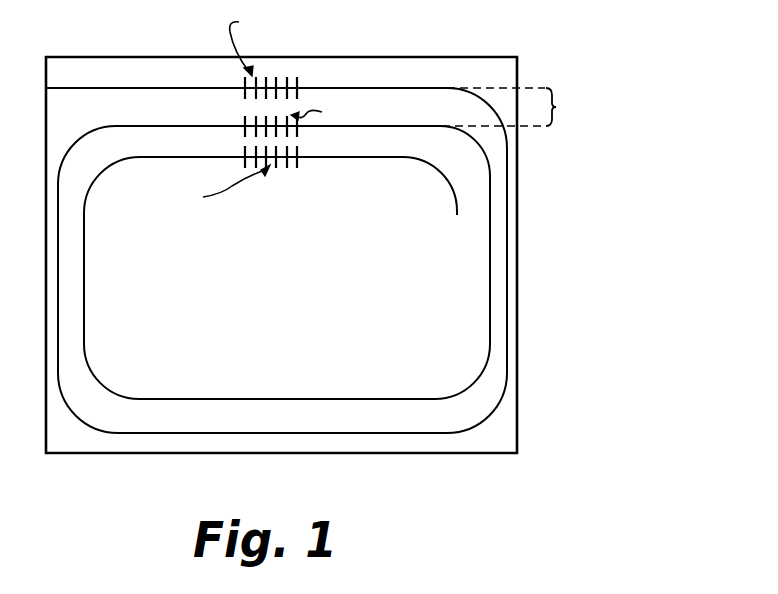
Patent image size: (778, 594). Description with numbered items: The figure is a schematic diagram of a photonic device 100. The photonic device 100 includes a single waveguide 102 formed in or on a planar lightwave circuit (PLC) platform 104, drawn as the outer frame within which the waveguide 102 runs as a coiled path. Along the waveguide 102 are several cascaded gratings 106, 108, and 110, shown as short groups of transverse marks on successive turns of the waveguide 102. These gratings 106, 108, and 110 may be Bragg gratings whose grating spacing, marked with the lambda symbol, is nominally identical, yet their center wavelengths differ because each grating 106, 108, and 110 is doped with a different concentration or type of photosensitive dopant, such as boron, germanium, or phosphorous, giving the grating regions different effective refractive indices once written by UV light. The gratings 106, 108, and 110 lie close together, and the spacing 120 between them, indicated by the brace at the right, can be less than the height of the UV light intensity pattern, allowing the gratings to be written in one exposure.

The photonic device 100 is at (582, 345).
The waveguide 102 is at (446, 88).
The planar lightwave circuit (PLC) platform 104 is at (520, 62).
The grating 106 is at (298, 78).
The grating 108 is at (245, 117).
The grating 110 is at (298, 165).
The spacing 120 is at (517, 107).